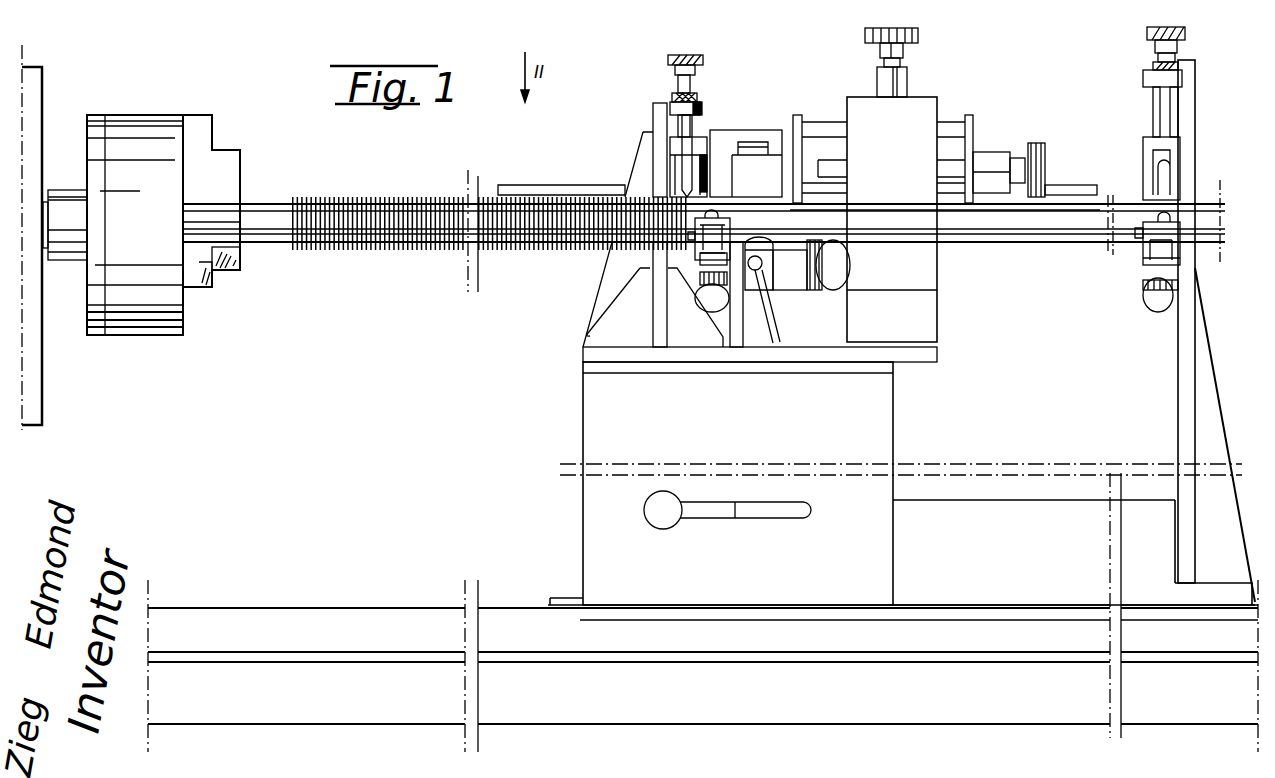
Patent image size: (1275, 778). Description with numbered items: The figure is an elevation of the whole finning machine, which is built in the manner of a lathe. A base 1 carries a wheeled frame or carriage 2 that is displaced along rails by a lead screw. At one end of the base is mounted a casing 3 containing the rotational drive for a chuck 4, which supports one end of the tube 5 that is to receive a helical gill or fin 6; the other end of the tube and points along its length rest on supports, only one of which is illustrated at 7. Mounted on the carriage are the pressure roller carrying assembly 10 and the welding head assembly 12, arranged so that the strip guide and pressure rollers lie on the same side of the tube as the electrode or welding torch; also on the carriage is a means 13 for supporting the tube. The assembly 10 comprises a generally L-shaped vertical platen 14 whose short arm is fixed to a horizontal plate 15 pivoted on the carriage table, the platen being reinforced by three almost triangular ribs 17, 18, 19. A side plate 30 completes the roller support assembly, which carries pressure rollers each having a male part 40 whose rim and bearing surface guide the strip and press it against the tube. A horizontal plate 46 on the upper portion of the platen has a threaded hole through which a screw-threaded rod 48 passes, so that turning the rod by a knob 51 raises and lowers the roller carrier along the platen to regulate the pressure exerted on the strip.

The base 1 is at (375, 620).
The carriage 2 is at (583, 442).
The casing 3 is at (44, 404).
The chuck 4 is at (146, 117).
The tube 5 is at (1022, 236).
The helical gill or fin 6 is at (370, 246).
The support 7 is at (1210, 362).
The pressure roller carrying assembly 10 is at (669, 112).
The welding head assembly 12 is at (839, 69).
The tube supporting means 13 is at (786, 328).
The vertical platen 14 is at (652, 112).
The horizontal plate 15 is at (583, 355).
The rib 17 is at (688, 340).
The rib 18 is at (603, 320).
The rib 19 is at (634, 160).
The side plate 30 is at (705, 173).
The male part of pressure roller 40 is at (710, 153).
The horizontal plate 46 is at (700, 108).
The screw-threaded rod 48 is at (678, 84).
The knob 51 is at (697, 58).